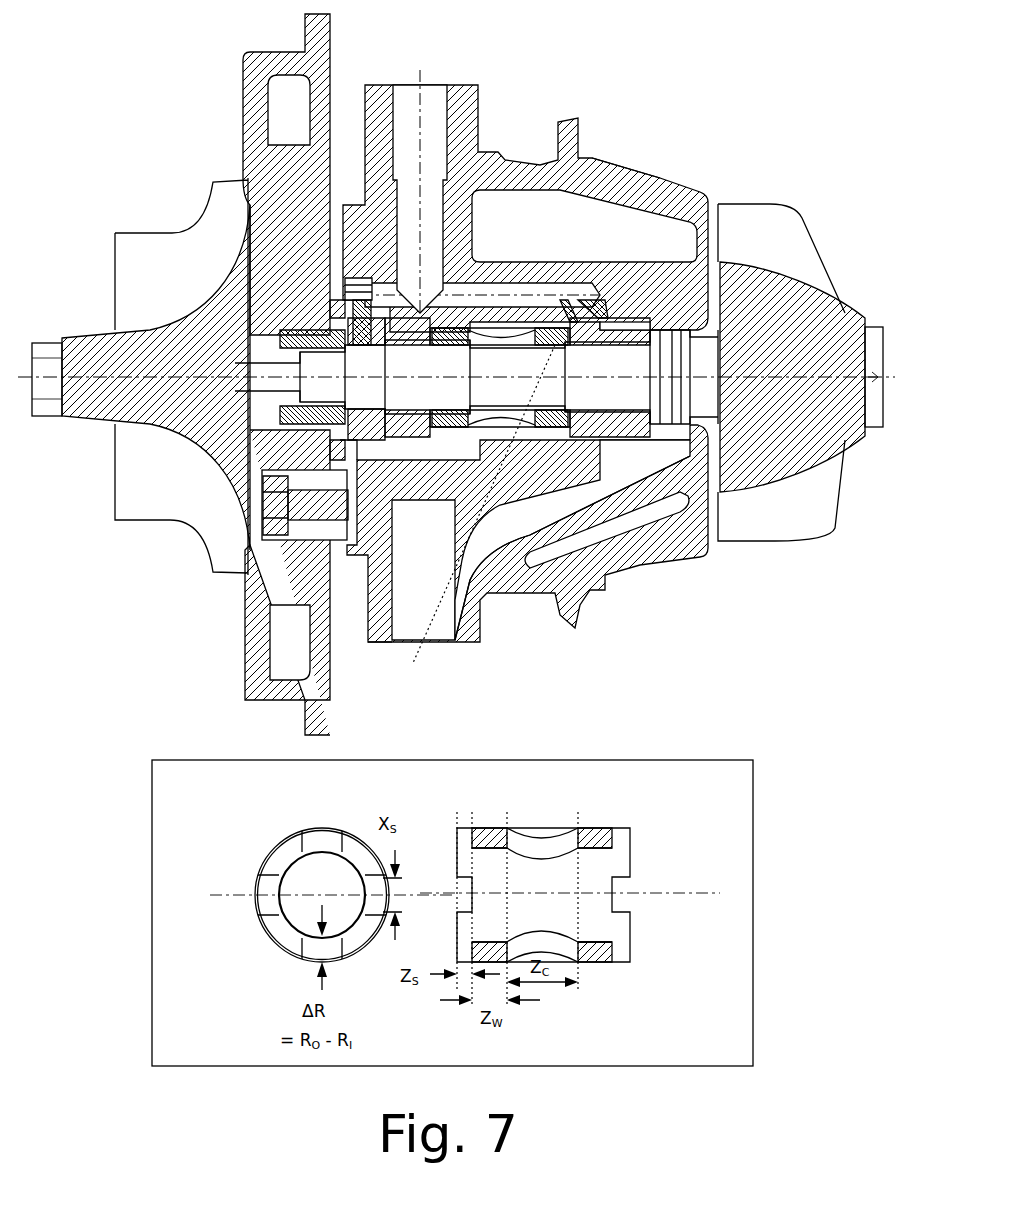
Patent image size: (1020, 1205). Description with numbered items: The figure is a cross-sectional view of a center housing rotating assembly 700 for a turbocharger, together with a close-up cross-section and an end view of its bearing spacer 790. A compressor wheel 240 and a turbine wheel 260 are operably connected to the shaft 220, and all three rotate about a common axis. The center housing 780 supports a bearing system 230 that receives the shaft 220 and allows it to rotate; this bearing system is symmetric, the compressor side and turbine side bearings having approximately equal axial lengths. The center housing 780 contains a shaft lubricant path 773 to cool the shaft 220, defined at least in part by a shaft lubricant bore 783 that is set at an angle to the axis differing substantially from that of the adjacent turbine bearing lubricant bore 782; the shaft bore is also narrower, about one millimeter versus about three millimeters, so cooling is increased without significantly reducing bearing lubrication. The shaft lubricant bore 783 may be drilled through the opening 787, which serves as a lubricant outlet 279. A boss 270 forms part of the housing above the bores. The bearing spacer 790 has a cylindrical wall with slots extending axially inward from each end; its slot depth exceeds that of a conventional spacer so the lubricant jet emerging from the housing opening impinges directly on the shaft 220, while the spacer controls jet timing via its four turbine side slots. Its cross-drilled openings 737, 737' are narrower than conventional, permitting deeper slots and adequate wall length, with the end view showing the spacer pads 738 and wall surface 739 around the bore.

The center housing rotating assembly 700 is at (170, 54).
The compressor wheel 240 is at (148, 190).
The oil inlet boss 270 is at (443, 62).
The turbine wheel 260 is at (768, 162).
The center housing 780 is at (645, 190).
The shaft lubricant bore 783 is at (572, 292).
The turbine bearing lubricant bore 782 is at (585, 288).
The shaft lubricant path 773 is at (563, 293).
The shaft 220 is at (476, 377).
The bearing spacer 790 is at (497, 420).
The bearing system 230 is at (541, 440).
The opening 787 is at (392, 643).
The lubricant outlet 279 is at (452, 668).
The bearing pad 738 is at (493, 826).
The cross-drilled opening 737 is at (608, 875).
The cross-drilled opening 737' is at (608, 967).
The bearing journal surface 739 is at (607, 848).